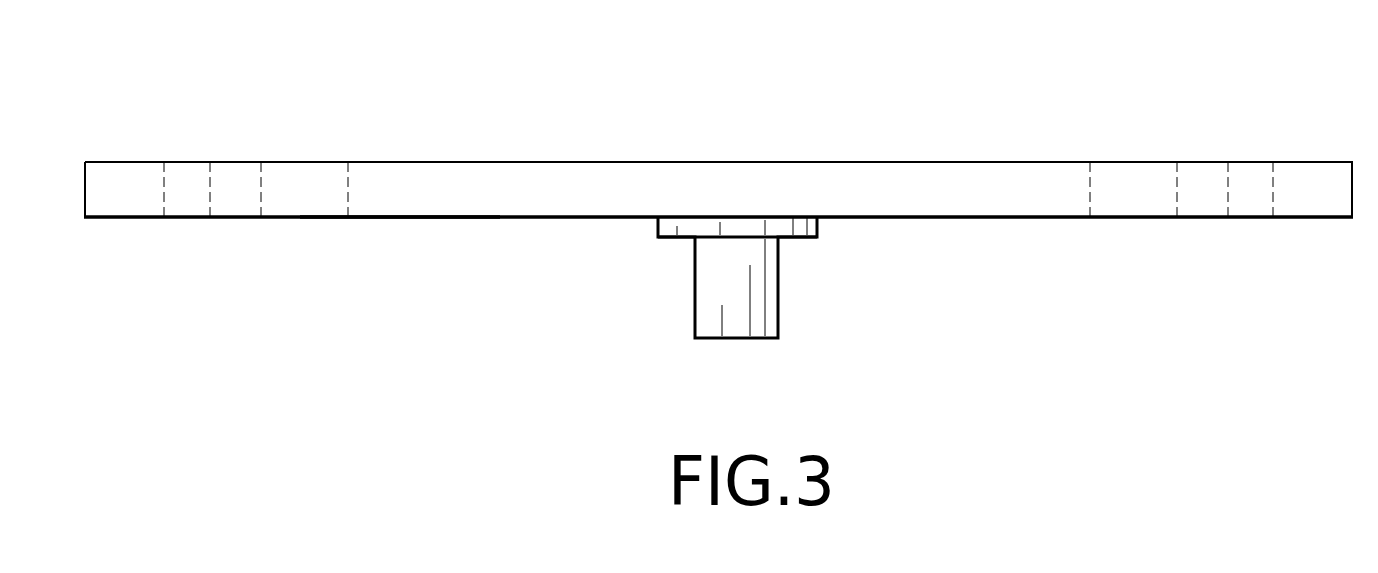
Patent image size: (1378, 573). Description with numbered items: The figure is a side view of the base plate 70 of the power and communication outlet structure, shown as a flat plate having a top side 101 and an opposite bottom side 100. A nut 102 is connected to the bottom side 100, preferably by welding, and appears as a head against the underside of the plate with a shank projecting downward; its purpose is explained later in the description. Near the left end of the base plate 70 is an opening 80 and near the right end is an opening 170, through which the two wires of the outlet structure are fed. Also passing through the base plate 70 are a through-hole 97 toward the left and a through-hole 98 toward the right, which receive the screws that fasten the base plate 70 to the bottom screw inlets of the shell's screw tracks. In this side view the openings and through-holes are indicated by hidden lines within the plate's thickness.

The base plate 70 is at (105, 163).
The opening 80 is at (258, 188).
The through-hole 97 is at (168, 190).
The through-hole 98 is at (1227, 190).
The bottom side 100 is at (395, 217).
The top side 101 is at (492, 175).
The nut 102 is at (778, 310).
The opening 170 is at (1088, 190).